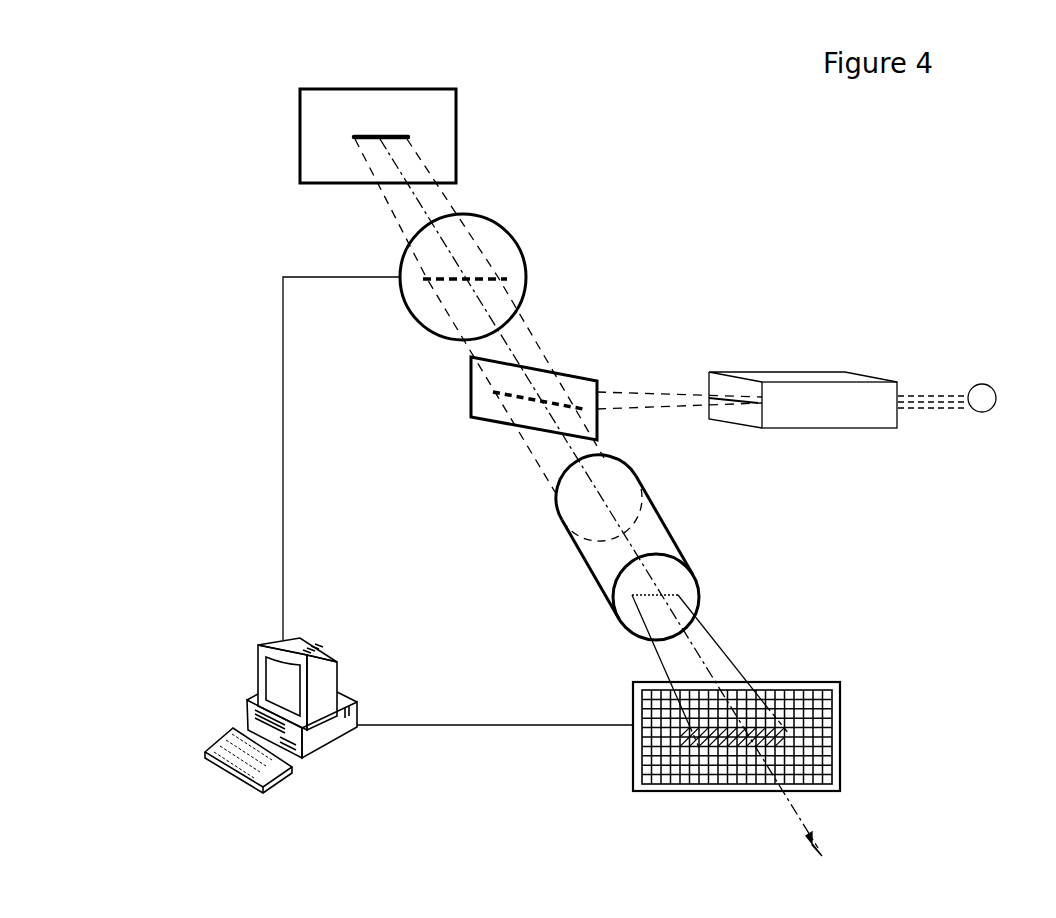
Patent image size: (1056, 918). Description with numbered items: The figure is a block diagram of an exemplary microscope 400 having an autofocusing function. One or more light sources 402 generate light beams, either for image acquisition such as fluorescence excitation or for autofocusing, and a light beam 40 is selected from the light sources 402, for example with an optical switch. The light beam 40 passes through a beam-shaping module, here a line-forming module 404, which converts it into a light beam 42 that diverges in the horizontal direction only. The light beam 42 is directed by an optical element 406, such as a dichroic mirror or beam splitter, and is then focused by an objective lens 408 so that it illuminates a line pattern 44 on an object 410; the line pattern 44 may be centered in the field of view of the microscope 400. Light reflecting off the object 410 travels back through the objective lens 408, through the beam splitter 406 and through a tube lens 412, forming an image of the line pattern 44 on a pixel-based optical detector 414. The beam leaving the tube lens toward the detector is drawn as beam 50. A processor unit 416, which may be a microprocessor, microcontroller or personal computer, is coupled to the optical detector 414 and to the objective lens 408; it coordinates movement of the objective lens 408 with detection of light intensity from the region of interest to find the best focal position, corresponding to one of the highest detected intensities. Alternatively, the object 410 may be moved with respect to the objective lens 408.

The microscope 400 is at (386, 537).
The light source 402 is at (985, 412).
The light beam 40 is at (927, 394).
The line-forming module 404 is at (803, 400).
The light beam 42 is at (640, 392).
The optical element 406 is at (471, 404).
The objective lens 408 is at (413, 318).
The object 410 is at (300, 133).
The line pattern 44 is at (408, 133).
The tube lens 412 is at (586, 563).
The output beam 50 is at (718, 642).
The pixel-based optical detector 414 is at (633, 691).
The processor unit 416 is at (247, 701).